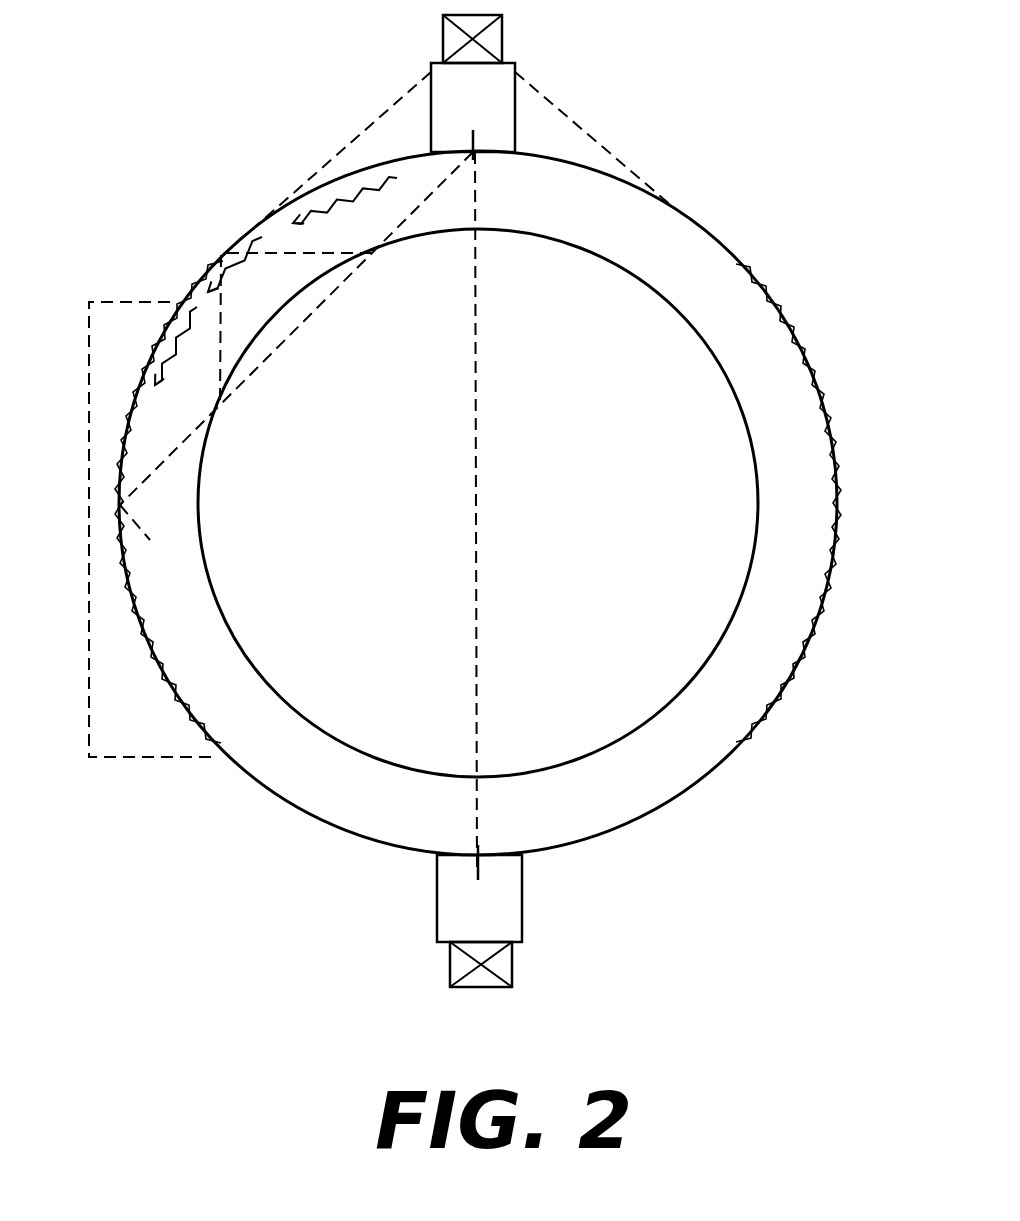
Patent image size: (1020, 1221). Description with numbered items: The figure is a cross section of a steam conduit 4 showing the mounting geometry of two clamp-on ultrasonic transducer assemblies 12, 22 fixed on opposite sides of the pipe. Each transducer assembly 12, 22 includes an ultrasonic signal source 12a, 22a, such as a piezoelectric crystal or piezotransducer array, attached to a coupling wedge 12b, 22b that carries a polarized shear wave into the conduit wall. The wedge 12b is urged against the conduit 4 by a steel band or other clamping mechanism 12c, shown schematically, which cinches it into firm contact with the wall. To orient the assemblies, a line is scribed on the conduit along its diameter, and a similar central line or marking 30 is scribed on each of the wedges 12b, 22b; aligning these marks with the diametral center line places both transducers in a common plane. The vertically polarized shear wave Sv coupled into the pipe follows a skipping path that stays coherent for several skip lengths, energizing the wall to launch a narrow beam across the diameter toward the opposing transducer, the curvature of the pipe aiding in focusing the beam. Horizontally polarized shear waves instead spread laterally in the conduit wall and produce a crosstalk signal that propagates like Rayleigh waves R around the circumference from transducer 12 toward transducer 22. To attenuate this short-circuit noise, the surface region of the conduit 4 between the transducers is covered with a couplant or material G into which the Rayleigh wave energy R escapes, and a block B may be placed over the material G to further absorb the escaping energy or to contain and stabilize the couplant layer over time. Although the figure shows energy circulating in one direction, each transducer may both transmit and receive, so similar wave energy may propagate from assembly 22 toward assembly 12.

The conduit 4 is at (807, 313).
The transducer assembly 12 is at (408, 277).
The ultrasonic signal source 12a is at (430, 38).
The wedge 12b is at (450, 107).
The clamping mechanism 12c is at (583, 138).
The transducer assembly 22 is at (480, 926).
The ultrasonic signal source 22a is at (458, 965).
The wedge 22b is at (452, 901).
The central line or marking 30 is at (474, 135).
The vertically polarized shear wave Sv is at (476, 207).
The tire center D is at (476, 502).
The Rayleigh waves R is at (223, 256).
The couplant or material G is at (137, 383).
The block B is at (143, 737).